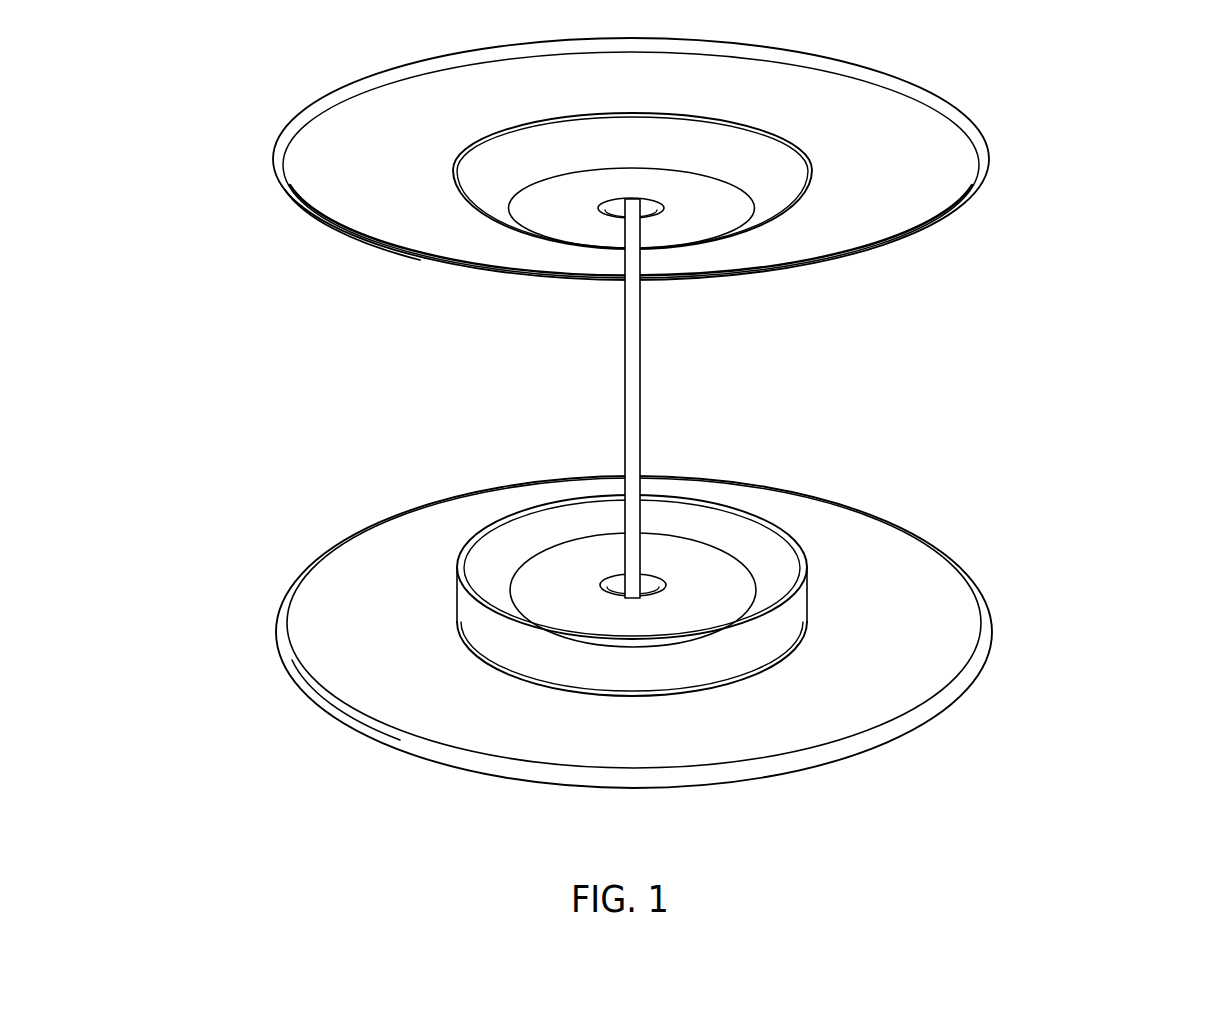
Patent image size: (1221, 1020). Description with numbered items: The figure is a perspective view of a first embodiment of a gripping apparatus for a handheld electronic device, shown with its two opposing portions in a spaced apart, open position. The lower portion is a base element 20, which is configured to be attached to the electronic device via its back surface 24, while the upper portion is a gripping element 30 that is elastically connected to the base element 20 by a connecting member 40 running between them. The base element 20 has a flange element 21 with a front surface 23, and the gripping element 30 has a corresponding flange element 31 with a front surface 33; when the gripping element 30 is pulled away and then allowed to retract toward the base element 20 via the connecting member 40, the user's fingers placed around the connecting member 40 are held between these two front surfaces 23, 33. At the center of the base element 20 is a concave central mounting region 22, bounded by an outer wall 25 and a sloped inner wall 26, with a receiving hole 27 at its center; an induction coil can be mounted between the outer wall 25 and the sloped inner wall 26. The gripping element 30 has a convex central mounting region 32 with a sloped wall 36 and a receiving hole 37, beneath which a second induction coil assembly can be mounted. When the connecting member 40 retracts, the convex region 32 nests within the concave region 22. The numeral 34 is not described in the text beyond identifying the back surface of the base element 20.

The base element 20 is at (678, 610).
The flange element 21 is at (991, 643).
The central mounting region 22 is at (566, 560).
The front surface 23 is at (318, 592).
The back surface 24 is at (888, 745).
The outer wall 25 is at (468, 618).
The sloped inner wall 26 is at (500, 557).
The receiving hole 27 is at (653, 586).
The gripping element 30 is at (650, 191).
The flange element 31 is at (978, 118).
The central mounting region 32 is at (772, 219).
The front surface 33 is at (329, 200).
The peripheral rim of upper disc 34 is at (897, 73).
The sloped wall 36 is at (475, 184).
The receiving hole 37 is at (645, 212).
The connecting member 40 is at (630, 380).